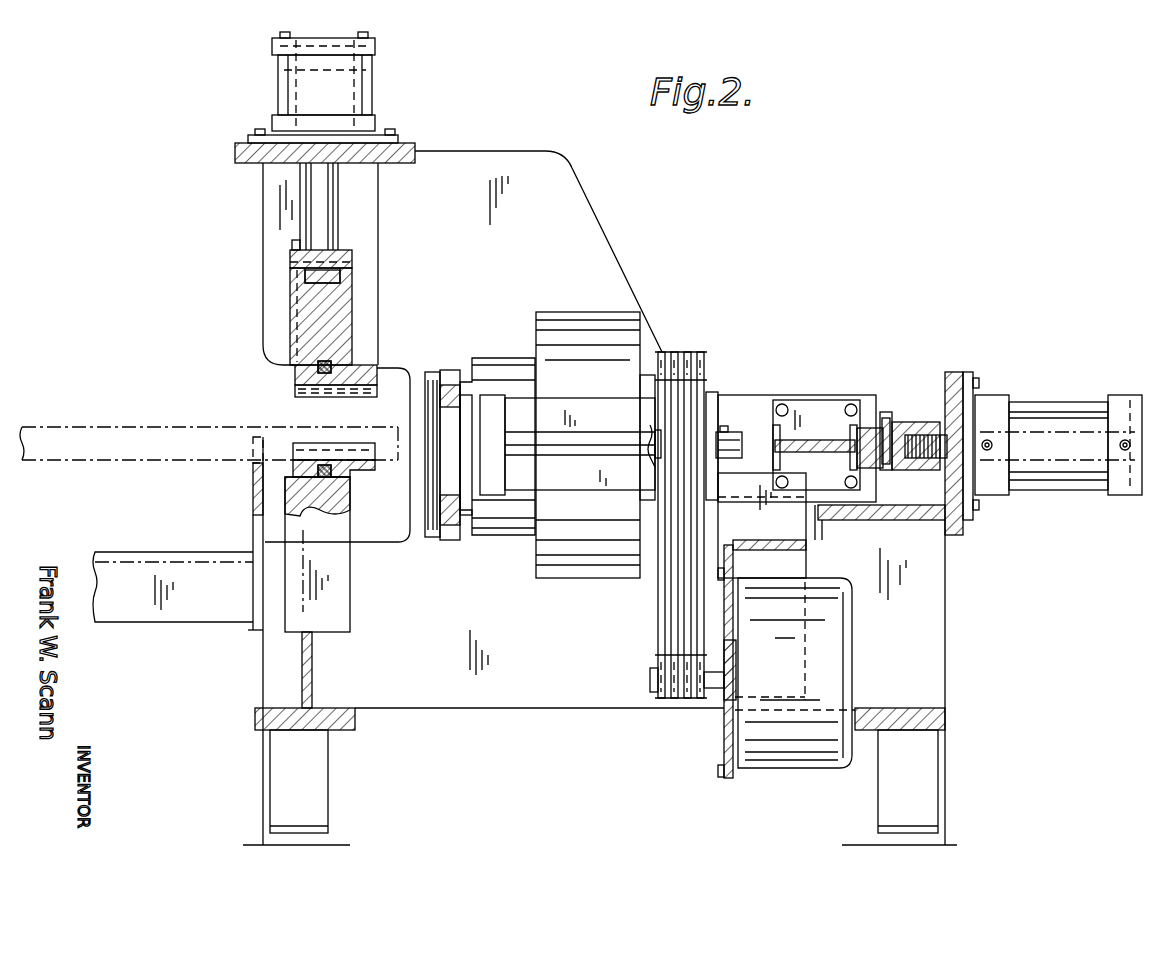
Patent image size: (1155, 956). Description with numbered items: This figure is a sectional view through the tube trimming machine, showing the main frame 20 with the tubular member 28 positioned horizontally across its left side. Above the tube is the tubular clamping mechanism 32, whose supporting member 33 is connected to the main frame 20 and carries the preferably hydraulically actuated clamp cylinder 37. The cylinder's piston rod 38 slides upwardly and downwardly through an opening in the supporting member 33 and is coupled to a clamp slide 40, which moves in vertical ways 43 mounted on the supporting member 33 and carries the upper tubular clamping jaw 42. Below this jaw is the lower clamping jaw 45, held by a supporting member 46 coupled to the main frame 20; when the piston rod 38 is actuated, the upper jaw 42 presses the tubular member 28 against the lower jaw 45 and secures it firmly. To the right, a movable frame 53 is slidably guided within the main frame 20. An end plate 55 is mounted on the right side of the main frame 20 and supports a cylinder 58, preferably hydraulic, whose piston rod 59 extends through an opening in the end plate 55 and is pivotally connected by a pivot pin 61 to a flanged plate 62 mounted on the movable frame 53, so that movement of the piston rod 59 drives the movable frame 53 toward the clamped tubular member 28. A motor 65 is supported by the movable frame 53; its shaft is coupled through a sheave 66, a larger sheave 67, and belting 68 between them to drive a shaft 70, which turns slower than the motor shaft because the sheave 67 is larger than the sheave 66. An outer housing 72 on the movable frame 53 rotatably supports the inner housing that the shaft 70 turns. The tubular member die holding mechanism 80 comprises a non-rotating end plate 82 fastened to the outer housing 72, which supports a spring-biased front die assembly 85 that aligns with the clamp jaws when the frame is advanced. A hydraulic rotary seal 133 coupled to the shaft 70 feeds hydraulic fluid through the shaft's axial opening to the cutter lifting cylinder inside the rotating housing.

The main frame 20 is at (521, 700).
The tubular member 28 is at (156, 427).
The tubular clamping mechanism 32 is at (415, 108).
The supporting member 33 is at (258, 162).
The clamp cylinder 37 is at (292, 88).
The piston rod 38 is at (322, 220).
The clamp slide 40 is at (310, 305).
The upper tubular clamping jaw 42 is at (293, 386).
The vertical ways 43 is at (352, 274).
The lower clamping jaw 45 is at (360, 479).
The supporting member 46 is at (338, 594).
The movable frame 53 is at (748, 412).
The end plate 55 is at (958, 385).
The cylinder 58 is at (1056, 416).
The piston rod 59 is at (936, 440).
The pivot pin 61 is at (887, 412).
The flanged plate 62 is at (822, 440).
The motor 65 is at (820, 668).
The sheave 66 is at (655, 664).
The sheave 67 is at (706, 378).
The belting 68 is at (680, 620).
The shaft 70 is at (657, 440).
The outer housing 72 is at (575, 330).
The tubular member die holding mechanism 80 is at (449, 359).
The non-rotating end plate 82 is at (500, 365).
The front die assembly 85 is at (432, 480).
The hydraulic rotary seal 133 is at (734, 470).